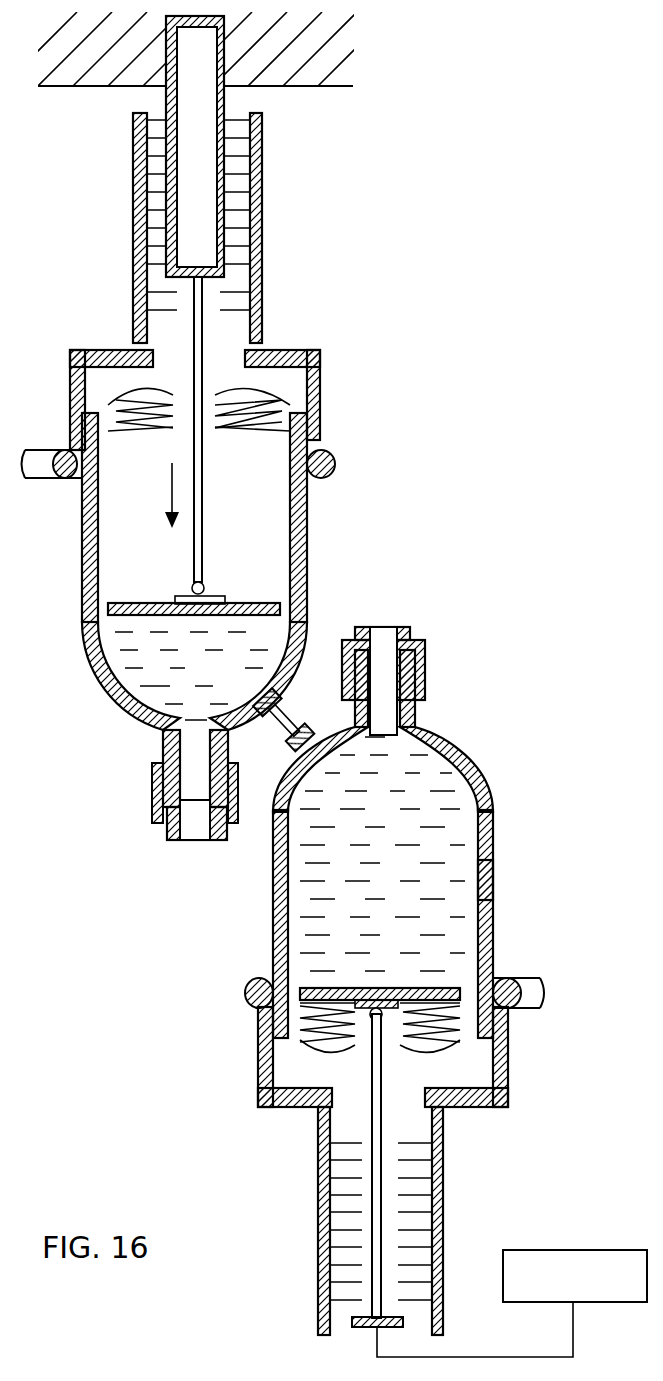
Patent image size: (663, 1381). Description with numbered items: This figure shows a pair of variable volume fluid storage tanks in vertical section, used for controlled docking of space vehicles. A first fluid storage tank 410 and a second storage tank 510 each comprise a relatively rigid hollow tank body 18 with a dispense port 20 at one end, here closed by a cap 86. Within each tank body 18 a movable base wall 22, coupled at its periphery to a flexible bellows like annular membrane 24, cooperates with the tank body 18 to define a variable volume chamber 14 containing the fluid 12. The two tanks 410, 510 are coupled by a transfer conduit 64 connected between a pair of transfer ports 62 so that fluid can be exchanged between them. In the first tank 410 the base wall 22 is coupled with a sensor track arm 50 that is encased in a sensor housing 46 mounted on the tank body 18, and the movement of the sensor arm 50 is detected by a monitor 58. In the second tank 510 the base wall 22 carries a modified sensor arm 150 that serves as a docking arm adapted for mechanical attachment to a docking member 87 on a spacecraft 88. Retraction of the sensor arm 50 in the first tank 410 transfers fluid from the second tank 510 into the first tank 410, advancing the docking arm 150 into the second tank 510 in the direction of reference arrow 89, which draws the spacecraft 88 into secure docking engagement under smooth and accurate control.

The fluid 12 is at (298, 905).
The variable volume chamber 14 is at (456, 805).
The tank body 18 is at (82, 541).
The dispense port 20 is at (163, 745).
The base wall 22 is at (127, 604).
The bellows like annular membrane 24 is at (283, 395).
The sensor housing 46 is at (318, 1165).
The sensor track arm 50 is at (383, 1135).
The monitor 58 is at (577, 1250).
The transfer port 62 is at (270, 697).
The transfer conduit 64 is at (290, 735).
The cap 86 is at (167, 828).
The docking member 87 is at (166, 97).
The spacecraft 88 is at (312, 87).
The reference arrow 89 is at (172, 478).
The modified sensor arm 150 is at (203, 492).
The first fluid storage tank 410 is at (501, 892).
The second storage tank 510 is at (323, 545).